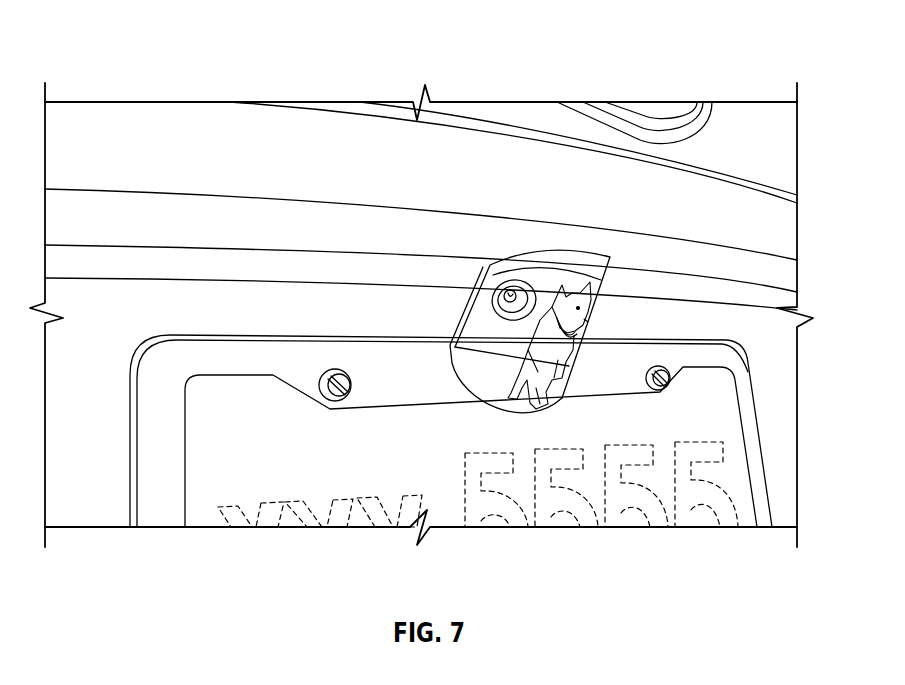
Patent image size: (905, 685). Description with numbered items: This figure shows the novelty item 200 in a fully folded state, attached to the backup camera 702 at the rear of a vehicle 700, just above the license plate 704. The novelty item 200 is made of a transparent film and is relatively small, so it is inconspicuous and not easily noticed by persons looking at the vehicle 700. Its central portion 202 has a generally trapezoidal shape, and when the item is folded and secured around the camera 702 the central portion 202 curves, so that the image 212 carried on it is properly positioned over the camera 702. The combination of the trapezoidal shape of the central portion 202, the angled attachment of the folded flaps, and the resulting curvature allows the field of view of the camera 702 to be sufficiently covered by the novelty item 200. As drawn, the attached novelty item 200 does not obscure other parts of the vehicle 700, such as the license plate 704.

The vehicle 700 is at (752, 112).
The license plate 704 is at (702, 417).
The novelty item 200 is at (548, 218).
The central portion 202 is at (543, 260).
The backup camera 702 is at (508, 297).
The image 212 is at (585, 311).